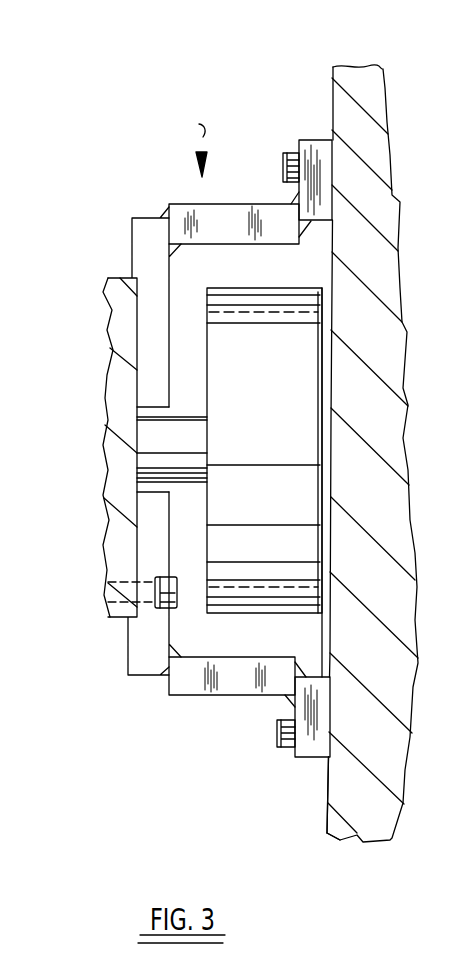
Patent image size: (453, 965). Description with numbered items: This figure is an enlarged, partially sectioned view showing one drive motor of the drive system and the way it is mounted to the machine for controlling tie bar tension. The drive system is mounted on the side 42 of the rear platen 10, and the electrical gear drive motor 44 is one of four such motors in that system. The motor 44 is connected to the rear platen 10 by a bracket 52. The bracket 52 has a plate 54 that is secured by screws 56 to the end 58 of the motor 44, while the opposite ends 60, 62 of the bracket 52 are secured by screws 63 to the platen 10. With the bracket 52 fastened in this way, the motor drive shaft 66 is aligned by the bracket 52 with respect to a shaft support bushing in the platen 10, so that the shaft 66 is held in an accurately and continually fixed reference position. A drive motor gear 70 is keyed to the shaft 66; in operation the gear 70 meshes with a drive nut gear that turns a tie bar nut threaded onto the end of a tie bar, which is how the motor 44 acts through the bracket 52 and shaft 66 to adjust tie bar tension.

The rear platen 10 is at (357, 83).
The side 42 is at (324, 813).
The electrical gear drive motor 44 is at (119, 300).
The bracket 52 is at (188, 146).
The plate 54 is at (143, 232).
The screws 56 is at (160, 611).
The end 58 is at (138, 559).
The end 60 is at (313, 145).
The end 62 is at (305, 747).
The screws 63 is at (282, 167).
The motor drive shaft 66 is at (147, 458).
The drive motor gear 70 is at (302, 326).